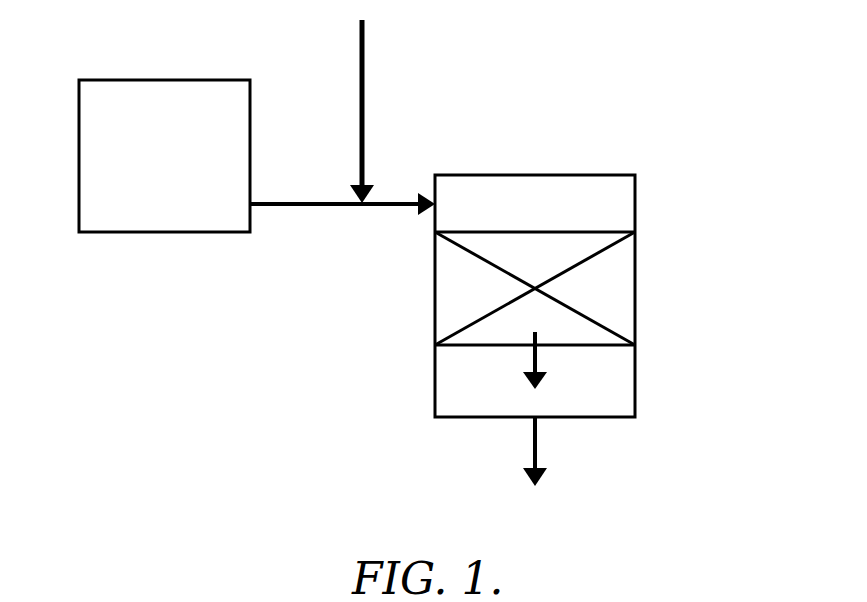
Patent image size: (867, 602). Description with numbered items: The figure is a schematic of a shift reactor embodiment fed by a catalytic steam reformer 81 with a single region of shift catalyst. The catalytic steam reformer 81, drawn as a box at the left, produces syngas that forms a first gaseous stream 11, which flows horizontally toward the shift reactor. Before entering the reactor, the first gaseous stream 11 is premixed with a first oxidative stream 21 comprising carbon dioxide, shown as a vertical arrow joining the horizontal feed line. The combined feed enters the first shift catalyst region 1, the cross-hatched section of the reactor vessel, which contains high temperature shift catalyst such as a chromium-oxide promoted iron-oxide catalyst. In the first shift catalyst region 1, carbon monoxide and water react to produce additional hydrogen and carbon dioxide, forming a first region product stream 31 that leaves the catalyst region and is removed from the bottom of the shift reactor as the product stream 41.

The first shift catalyst region 1 is at (622, 302).
The first gaseous stream 11 is at (308, 206).
The first oxidative stream 21 is at (365, 121).
The first region product stream 31 is at (538, 360).
The product stream 41 is at (538, 443).
The catalytic steam reformer 81 is at (143, 178).